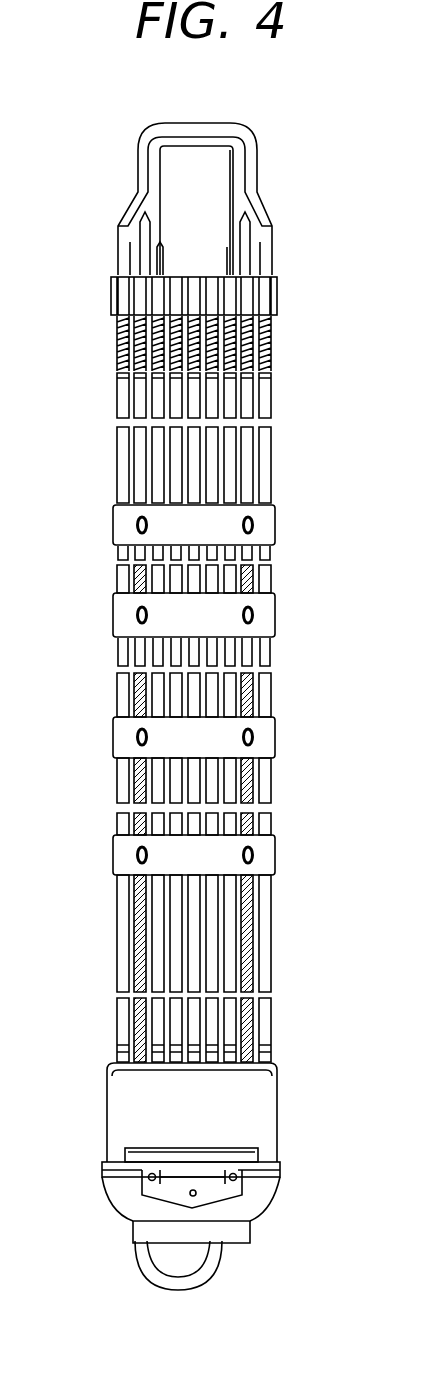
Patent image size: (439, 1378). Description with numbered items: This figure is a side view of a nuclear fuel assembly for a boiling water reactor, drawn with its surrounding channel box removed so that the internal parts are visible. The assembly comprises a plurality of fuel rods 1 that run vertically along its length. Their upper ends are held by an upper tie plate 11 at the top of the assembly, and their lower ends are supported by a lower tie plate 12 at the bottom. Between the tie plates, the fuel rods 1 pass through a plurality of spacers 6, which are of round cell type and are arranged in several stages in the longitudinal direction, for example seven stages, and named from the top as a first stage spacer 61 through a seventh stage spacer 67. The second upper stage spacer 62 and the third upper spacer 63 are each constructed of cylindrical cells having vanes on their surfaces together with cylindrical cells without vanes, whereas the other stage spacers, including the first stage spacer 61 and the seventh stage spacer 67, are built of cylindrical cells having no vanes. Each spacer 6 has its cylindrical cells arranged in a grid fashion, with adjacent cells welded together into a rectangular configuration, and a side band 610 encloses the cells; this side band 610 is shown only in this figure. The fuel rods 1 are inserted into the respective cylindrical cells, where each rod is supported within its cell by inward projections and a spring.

The fuel rods 1 is at (247, 456).
The spacer 6 is at (56, 872).
The upper tie plate 11 is at (177, 278).
The lower tie plate 12 is at (260, 1090).
The first stage spacer 61 is at (118, 527).
The second upper stage spacer 62 is at (118, 607).
The third upper spacer 63 is at (118, 727).
The seventh stage spacer 67 is at (118, 842).
The side band 610 is at (266, 612).